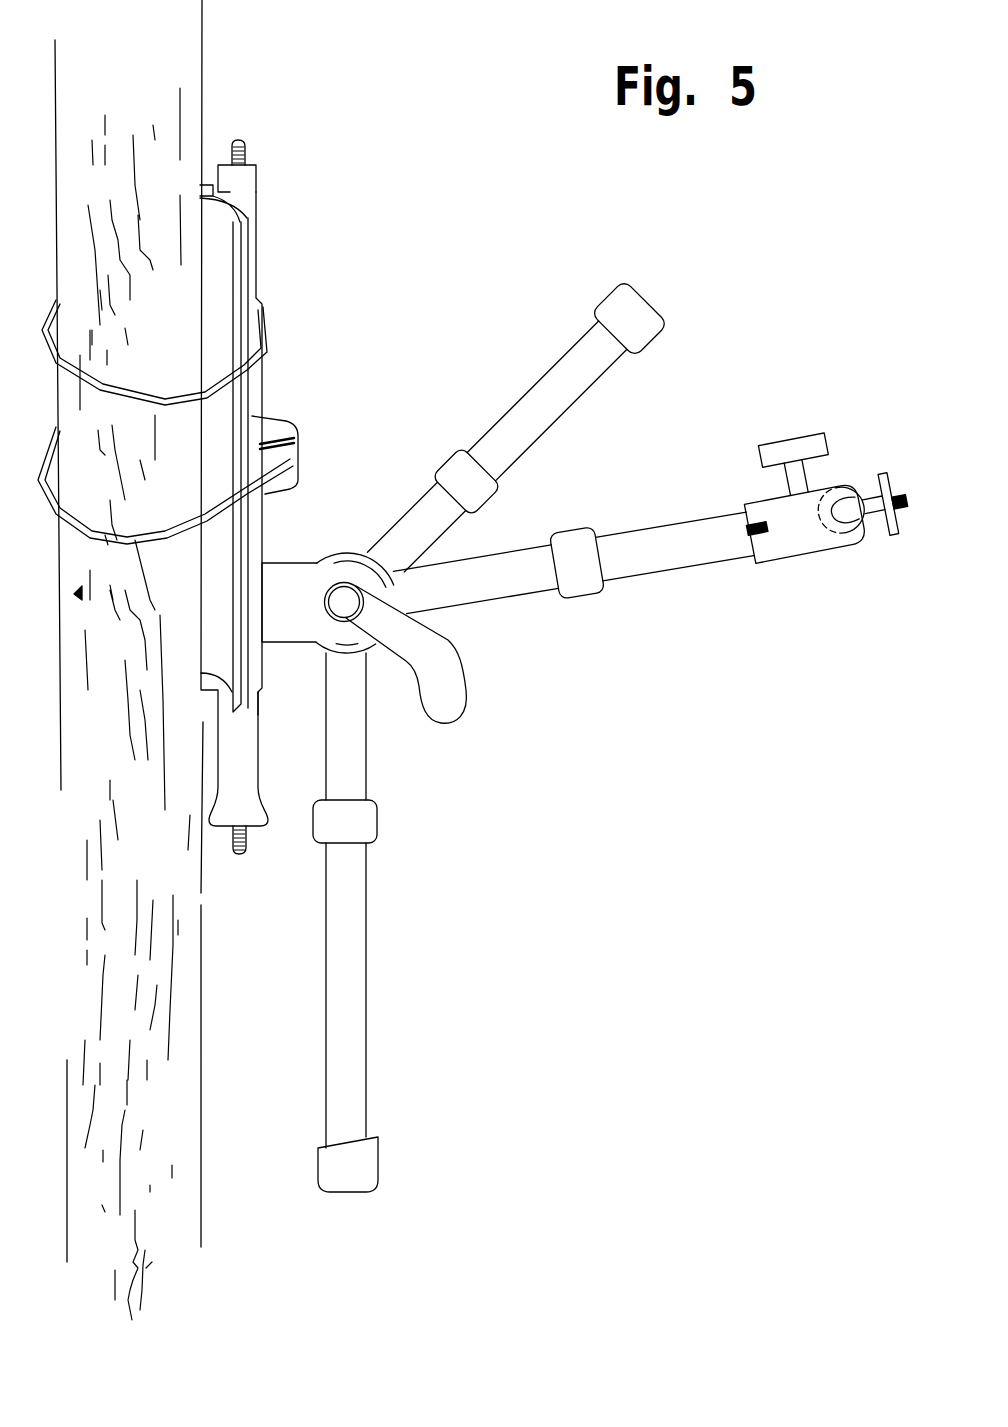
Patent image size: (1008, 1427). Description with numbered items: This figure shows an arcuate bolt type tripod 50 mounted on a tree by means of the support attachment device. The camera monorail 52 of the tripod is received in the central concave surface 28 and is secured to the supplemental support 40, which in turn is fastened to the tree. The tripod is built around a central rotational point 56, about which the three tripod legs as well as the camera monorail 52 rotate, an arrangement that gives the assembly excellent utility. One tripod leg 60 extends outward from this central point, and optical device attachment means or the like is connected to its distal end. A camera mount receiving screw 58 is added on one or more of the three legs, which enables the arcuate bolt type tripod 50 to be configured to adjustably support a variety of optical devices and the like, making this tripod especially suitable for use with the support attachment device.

The supplemental support 40 is at (178, 1213).
The central concave surface 28 is at (227, 200).
The camera monorail 52 is at (247, 167).
The arcuate bolt type tripod 50 is at (293, 578).
The central rotational point 56 is at (348, 608).
The tripod leg 60 is at (633, 540).
The camera mount receiving screw 58 is at (770, 527).